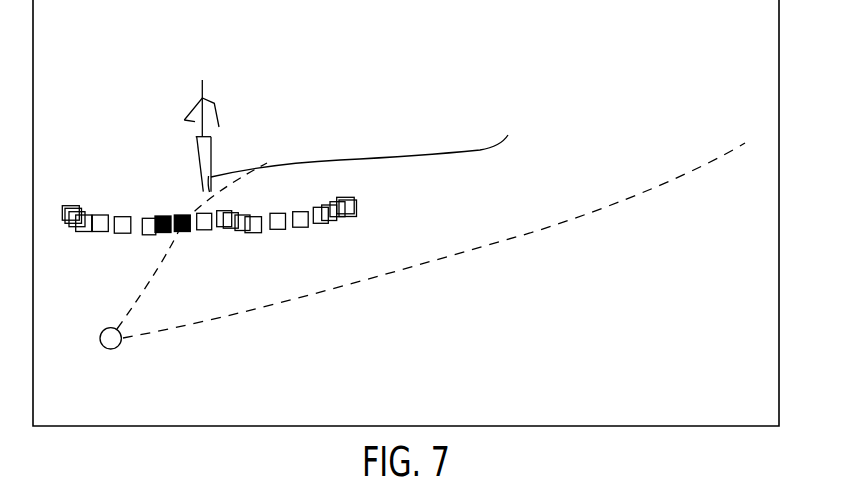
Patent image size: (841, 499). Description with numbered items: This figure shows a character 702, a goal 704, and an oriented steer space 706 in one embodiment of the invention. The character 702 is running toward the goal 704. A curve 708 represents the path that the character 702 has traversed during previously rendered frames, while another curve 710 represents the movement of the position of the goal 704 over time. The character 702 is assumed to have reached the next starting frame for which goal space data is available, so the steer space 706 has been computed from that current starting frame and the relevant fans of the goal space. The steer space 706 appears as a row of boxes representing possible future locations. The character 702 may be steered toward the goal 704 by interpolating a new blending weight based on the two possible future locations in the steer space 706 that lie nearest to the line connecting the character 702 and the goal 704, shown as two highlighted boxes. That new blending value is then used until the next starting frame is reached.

The character 702 is at (210, 98).
The goal 704 is at (118, 348).
The oriented steer space 706 is at (377, 203).
The curve 708 is at (390, 155).
The curve 710 is at (452, 257).